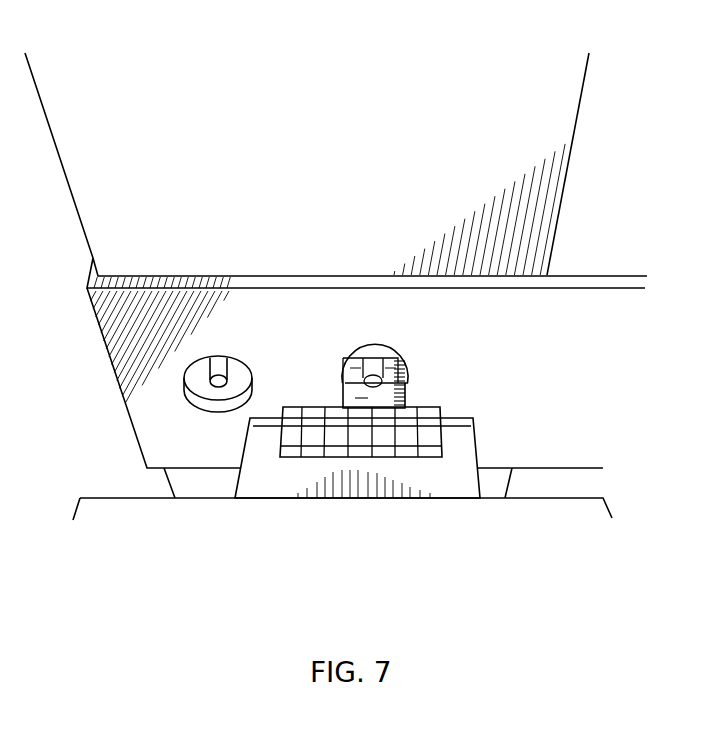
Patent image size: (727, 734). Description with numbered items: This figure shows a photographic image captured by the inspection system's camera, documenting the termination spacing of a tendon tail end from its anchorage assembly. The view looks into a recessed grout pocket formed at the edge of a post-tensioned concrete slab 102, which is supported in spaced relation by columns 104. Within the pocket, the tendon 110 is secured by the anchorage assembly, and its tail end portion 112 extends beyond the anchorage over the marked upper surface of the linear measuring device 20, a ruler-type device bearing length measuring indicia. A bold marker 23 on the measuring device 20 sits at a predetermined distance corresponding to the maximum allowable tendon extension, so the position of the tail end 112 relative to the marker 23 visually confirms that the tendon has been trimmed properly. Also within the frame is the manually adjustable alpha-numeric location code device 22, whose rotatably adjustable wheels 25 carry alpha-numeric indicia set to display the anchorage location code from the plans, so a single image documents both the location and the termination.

The columns 104 is at (385, 138).
The concrete slab 102 is at (137, 355).
The alpha-numeric location code device 22 is at (465, 451).
The rotatably adjustable wheels 25 is at (432, 410).
The linear measuring device 20 is at (344, 385).
The tendon 110 is at (373, 362).
The tail end portion 112 is at (390, 363).
The bold marker 23 is at (355, 392).